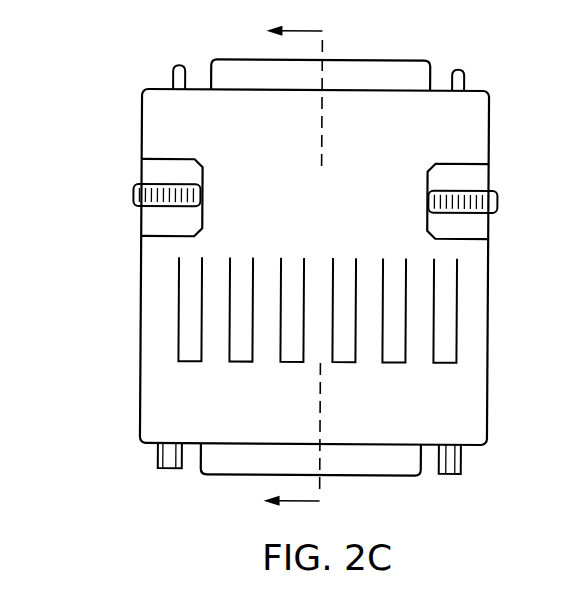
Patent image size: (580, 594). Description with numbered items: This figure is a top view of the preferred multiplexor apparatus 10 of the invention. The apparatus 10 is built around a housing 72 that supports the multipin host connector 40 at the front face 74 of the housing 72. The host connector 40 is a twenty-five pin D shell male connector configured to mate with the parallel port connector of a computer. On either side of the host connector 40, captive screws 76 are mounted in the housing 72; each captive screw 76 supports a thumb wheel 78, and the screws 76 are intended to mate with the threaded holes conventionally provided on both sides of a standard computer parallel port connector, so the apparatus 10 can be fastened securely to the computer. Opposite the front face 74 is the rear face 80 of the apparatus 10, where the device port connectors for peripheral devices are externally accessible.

The multiplexor apparatus 10 is at (294, 263).
The multipin host connector 40 is at (421, 60).
The housing 72 is at (473, 138).
The front face 74 is at (466, 89).
The captive screws 76 is at (172, 68).
The thumb wheel 78 is at (133, 196).
The rear face 80 is at (467, 446).